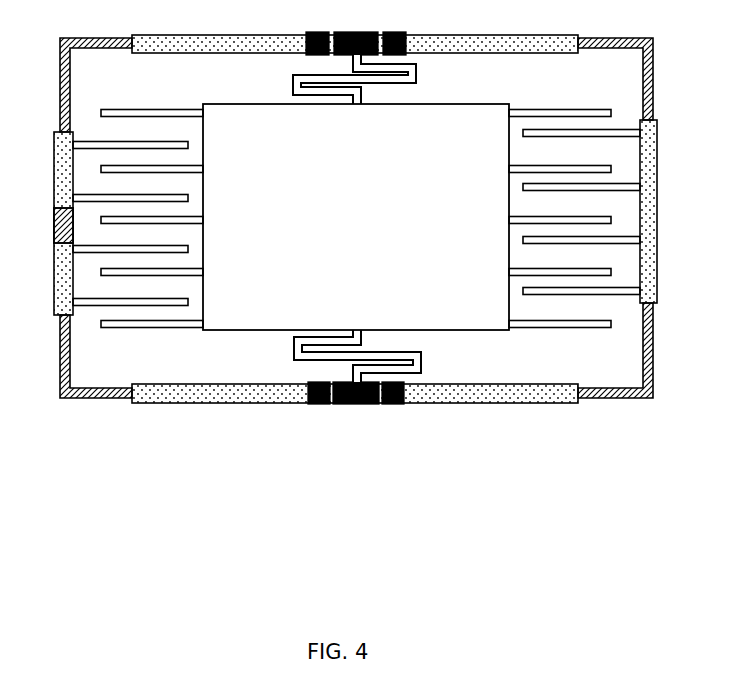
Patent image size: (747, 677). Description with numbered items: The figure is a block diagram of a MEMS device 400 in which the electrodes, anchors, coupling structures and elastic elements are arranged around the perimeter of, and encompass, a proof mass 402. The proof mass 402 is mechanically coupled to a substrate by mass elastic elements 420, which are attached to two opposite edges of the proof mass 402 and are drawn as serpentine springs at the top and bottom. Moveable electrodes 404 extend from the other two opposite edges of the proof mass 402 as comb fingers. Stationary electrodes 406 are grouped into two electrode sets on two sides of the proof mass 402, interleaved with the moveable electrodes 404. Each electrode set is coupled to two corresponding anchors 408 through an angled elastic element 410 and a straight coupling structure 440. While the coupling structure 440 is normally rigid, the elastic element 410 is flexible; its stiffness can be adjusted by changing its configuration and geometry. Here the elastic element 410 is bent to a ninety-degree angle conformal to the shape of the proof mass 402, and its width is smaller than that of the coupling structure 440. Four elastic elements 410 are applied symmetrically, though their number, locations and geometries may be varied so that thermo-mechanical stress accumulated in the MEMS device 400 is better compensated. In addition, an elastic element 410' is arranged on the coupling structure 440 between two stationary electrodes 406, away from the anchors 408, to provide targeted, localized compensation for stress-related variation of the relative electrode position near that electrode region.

The MEMS device 400 is at (359, 311).
The proof mass 402 is at (512, 108).
The moveable electrodes 404 is at (138, 109).
The stationary electrodes 406 is at (110, 306).
The anchors 408 is at (315, 404).
The elastic element 410 is at (356, 205).
The elastic element 410' is at (38, 228).
The mass elastic elements 420 is at (418, 77).
The coupling structure 440 is at (235, 35).